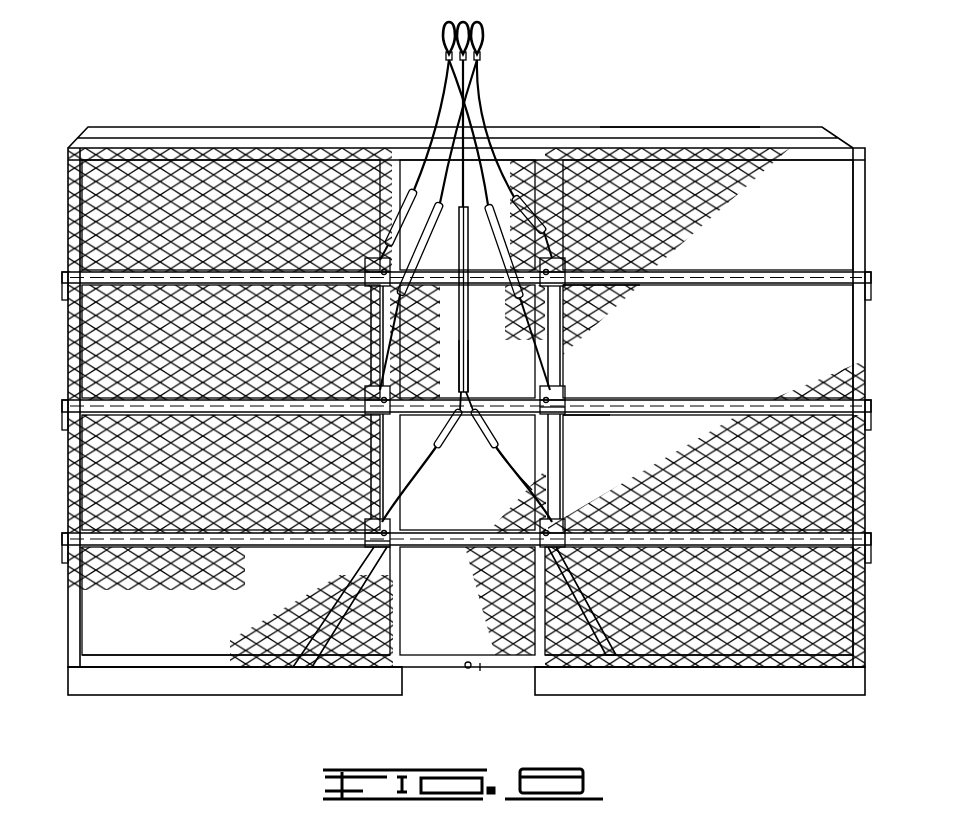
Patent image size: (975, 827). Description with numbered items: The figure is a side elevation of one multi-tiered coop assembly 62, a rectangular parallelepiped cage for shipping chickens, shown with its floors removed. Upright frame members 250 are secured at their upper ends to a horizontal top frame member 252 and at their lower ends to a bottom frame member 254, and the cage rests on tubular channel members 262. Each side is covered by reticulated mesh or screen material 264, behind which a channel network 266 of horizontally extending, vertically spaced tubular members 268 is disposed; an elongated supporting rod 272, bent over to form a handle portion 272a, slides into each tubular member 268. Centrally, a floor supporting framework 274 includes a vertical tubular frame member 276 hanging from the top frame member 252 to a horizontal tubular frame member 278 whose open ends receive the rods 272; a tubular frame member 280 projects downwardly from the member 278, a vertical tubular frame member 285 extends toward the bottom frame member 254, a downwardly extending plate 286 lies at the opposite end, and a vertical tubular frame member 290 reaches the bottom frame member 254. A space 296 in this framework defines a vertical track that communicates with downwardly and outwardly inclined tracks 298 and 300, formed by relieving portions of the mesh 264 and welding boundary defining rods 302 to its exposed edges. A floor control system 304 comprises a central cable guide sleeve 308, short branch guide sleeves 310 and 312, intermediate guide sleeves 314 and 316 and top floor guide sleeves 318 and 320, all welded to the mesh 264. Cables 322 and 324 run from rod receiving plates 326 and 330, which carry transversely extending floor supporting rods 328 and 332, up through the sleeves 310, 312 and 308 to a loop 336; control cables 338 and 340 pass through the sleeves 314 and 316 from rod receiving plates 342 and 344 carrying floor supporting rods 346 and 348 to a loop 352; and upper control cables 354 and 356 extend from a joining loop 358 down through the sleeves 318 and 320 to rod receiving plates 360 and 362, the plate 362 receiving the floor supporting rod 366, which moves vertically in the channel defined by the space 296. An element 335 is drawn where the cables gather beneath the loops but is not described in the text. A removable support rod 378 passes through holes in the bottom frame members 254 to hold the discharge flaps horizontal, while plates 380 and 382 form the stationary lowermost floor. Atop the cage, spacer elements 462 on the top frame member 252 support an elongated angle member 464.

The coop assembly 62 is at (828, 122).
The vertically extending frame member 250 is at (860, 230).
The top frame member 252 is at (380, 150).
The bottom frame member 254 is at (140, 670).
The tubular channel member 262 is at (108, 688).
The reticulated mesh or screen material 264 is at (215, 175).
The channel network 266 is at (682, 398).
The tubular member 268 is at (712, 284).
The elongated supporting rod 272 is at (780, 272).
The handle portion 272a is at (872, 284).
The floor supporting framework 274 is at (440, 560).
The vertically extending tubular frame member 276 is at (408, 203).
The horizontally extending tubular frame member 278 is at (470, 295).
The tubular frame member 280 is at (470, 378).
The vertically extending tubular frame member 285 is at (366, 480).
The downwardly extending plate 286 is at (517, 464).
The vertically extending tubular frame member 290 is at (402, 612).
The space 296 is at (596, 425).
The inclined track 298 is at (322, 636).
The inclined track 300 is at (590, 628).
The boundary defining rod 302 is at (288, 662).
The floor control system 304 is at (500, 155).
The cable guide sleeve 308 is at (470, 356).
The branch cable guide sleeve 310 is at (440, 424).
The branch cable guide sleeve 312 is at (488, 430).
The intermediate floor cable guide sleeve 314 is at (418, 295).
The intermediate floor cable guide sleeve 316 is at (512, 297).
The top floor guide sleeve 318 is at (376, 214).
The top floor guide sleeve 320 is at (526, 208).
The cable 322 is at (432, 456).
The cable 324 is at (516, 476).
The rod receiving plate 326 is at (368, 548).
The floor supporting rod 328 is at (365, 526).
The rod receiving plate 330 is at (564, 472).
The floor supporting rod 332 is at (540, 523).
The cable ferrule 335 is at (470, 60).
The loop 336 is at (469, 28).
The control cable 338 is at (450, 102).
The control cable 340 is at (564, 362).
The rod receiving plate 342 is at (365, 392).
The rod receiving plate 344 is at (566, 396).
The floor supporting rod 346 is at (348, 416).
The floor supporting rod 348 is at (566, 404).
The loop 352 is at (442, 32).
The upper control cable 354 is at (428, 170).
The upper control cable 356 is at (470, 100).
The joining loop 358 is at (484, 35).
The rod receiving plate 360 is at (366, 258).
The rod receiving plate 362 is at (660, 258).
The floor supporting rod 366 is at (606, 302).
The support rod 378 is at (462, 672).
The plate 380 is at (163, 652).
The plate 382 is at (696, 672).
The spacer element 462 is at (268, 150).
The angle member 464 is at (672, 128).